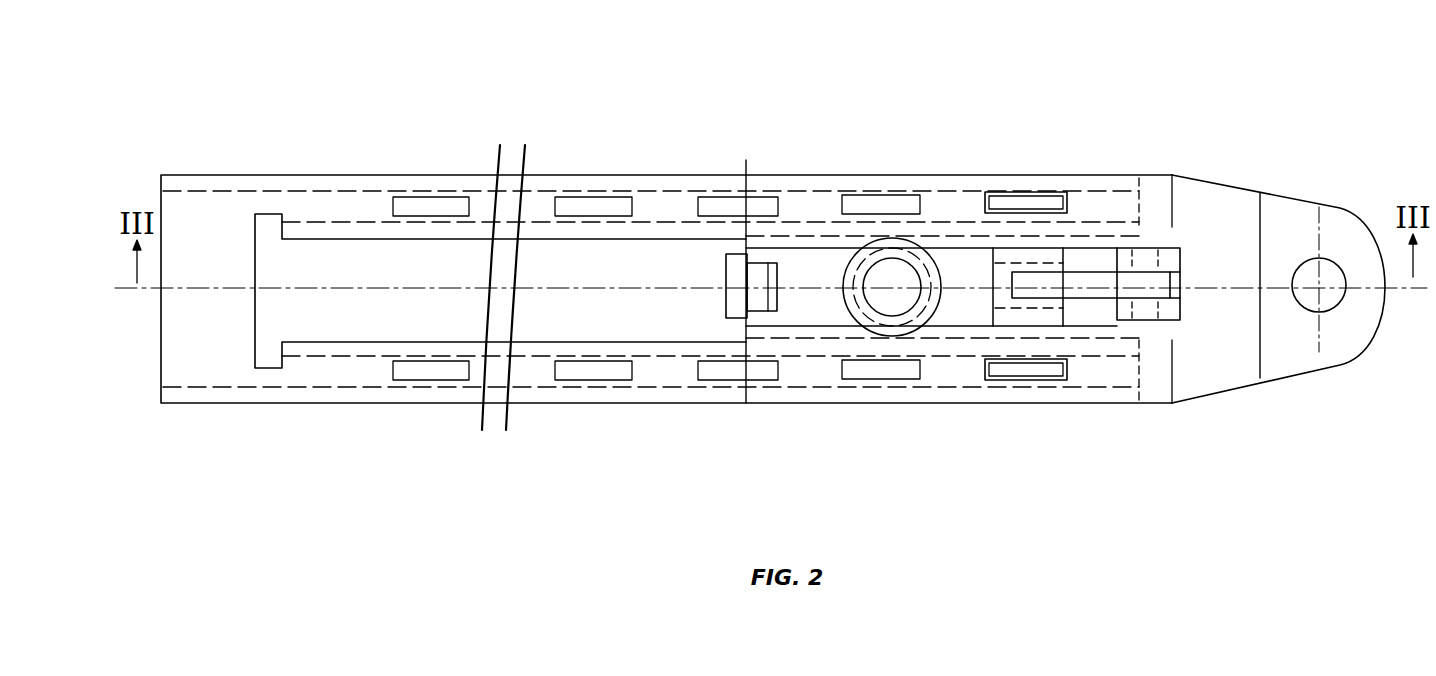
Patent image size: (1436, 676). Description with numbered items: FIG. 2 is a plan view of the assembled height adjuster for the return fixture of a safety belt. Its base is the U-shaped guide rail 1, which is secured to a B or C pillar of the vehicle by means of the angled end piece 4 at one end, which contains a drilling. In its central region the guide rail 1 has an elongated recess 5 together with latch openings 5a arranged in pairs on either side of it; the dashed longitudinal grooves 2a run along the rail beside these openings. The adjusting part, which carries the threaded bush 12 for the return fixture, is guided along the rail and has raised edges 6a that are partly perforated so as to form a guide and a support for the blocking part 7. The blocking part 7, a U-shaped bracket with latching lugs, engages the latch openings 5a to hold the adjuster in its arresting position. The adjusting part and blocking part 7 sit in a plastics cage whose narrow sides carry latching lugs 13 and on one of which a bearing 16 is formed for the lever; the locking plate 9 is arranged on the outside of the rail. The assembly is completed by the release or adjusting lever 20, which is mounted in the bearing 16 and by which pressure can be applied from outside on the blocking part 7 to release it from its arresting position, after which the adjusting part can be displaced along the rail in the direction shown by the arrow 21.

The guide rail 1 is at (278, 405).
The guide groove 2a is at (349, 208).
The angled end piece 4 is at (1343, 250).
The elongated recess 5 is at (500, 291).
The latch openings 5a is at (424, 212).
The raised edges 6a is at (1047, 202).
The blocking part 7 is at (1005, 268).
The locking plate 9 is at (942, 281).
The threaded bush 12 is at (893, 237).
The latching lugs 13 is at (772, 305).
The bearing 16 is at (1143, 310).
The adjusting lever 20 is at (1083, 292).
The arrow 21 is at (690, 111).